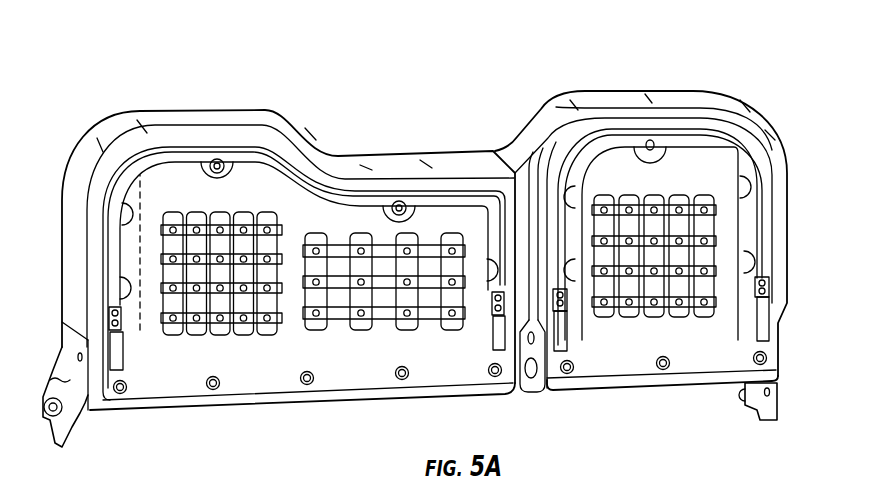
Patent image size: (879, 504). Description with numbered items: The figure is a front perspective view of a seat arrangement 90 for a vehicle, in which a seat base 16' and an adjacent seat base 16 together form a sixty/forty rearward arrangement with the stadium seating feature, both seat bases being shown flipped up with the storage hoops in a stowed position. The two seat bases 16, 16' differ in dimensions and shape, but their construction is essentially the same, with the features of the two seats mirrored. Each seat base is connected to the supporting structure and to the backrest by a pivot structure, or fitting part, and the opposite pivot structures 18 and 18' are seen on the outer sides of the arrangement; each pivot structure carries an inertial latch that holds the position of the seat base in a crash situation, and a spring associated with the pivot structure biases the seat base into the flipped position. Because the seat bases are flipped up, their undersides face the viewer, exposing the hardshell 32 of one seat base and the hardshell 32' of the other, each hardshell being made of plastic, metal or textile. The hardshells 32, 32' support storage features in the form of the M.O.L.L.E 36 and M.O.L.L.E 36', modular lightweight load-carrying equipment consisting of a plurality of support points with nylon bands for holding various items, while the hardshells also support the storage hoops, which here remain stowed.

The seat arrangement 90 is at (415, 244).
The seat base 16' is at (288, 230).
The seat base 16 is at (629, 230).
The M.O.L.L.E 36' is at (313, 218).
The M.O.L.L.E 36 is at (654, 182).
The hardshell 32' is at (301, 397).
The hardshell 32 is at (662, 401).
The pivot structure 18' is at (86, 407).
The pivot structure 18 is at (752, 425).